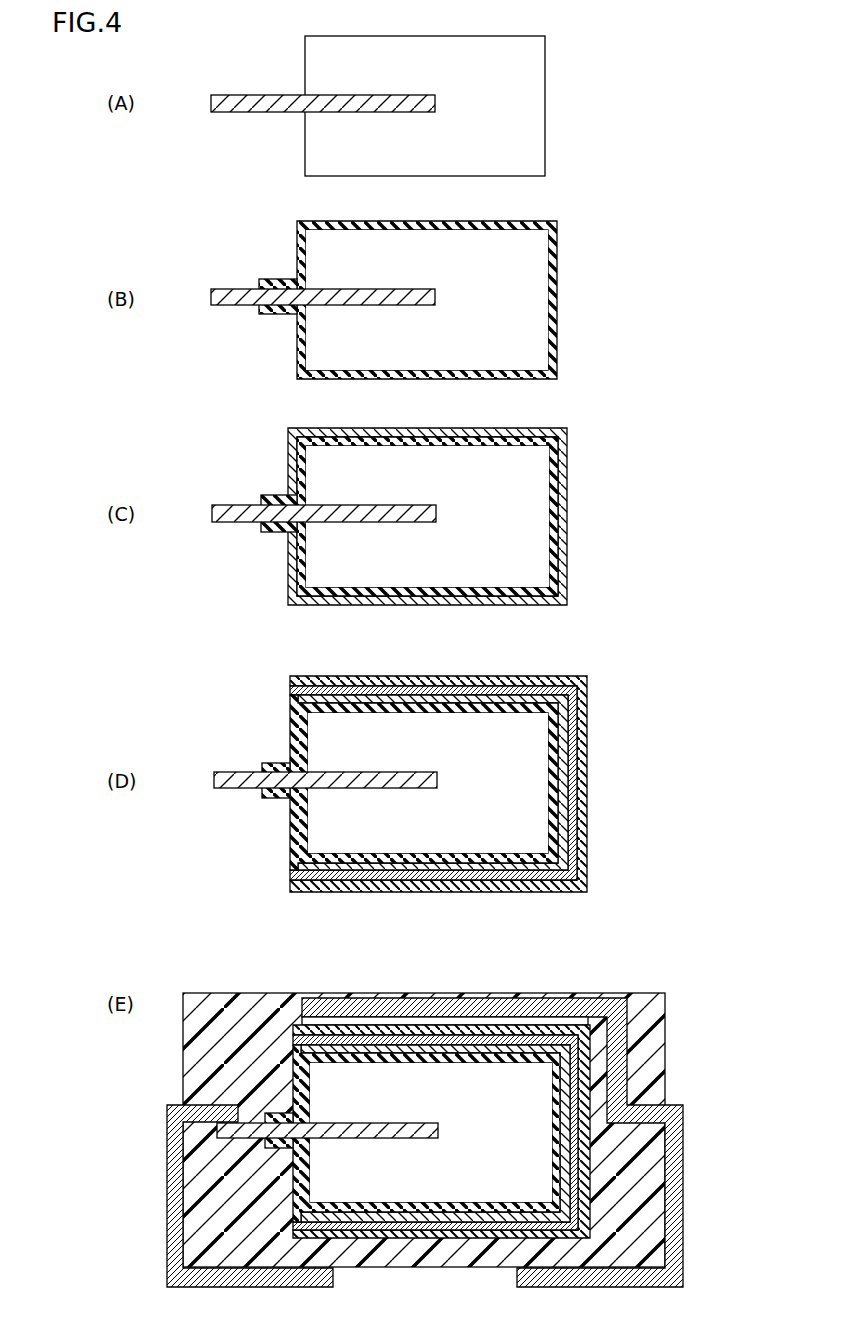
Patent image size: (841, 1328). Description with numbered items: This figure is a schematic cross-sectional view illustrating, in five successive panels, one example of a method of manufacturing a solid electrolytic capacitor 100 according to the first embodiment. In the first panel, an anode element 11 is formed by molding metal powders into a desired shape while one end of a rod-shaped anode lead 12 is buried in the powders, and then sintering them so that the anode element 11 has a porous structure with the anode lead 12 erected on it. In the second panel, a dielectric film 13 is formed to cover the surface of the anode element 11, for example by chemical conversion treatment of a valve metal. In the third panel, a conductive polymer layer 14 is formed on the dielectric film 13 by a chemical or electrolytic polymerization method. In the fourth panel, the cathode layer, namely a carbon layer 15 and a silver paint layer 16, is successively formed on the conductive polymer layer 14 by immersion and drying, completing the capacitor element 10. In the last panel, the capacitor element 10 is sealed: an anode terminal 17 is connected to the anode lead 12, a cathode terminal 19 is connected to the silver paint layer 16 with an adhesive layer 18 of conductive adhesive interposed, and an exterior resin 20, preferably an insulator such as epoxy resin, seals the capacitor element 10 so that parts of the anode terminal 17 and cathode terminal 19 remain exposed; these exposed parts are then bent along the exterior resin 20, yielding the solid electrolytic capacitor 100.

The capacitor element 10 is at (645, 739).
The anode element 11 is at (517, 101).
The anode lead 12 is at (232, 100).
The dielectric film 13 is at (553, 316).
The conductive polymer layer 14 is at (561, 555).
The carbon layer 15 is at (573, 843).
The silver paint layer 16 is at (582, 867).
The anode terminal 17 is at (170, 1168).
The adhesive layer 18 is at (517, 1020).
The cathode terminal 19 is at (580, 1017).
The exterior resin 20 is at (642, 1023).
The solid electrolytic capacitor 100 is at (712, 969).